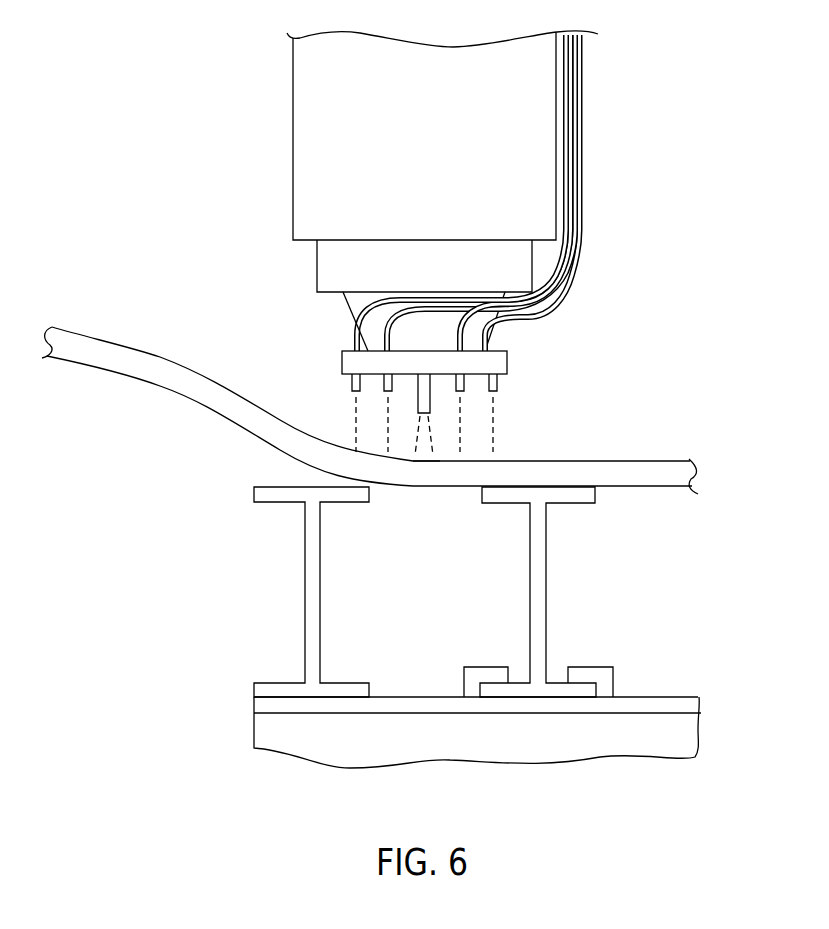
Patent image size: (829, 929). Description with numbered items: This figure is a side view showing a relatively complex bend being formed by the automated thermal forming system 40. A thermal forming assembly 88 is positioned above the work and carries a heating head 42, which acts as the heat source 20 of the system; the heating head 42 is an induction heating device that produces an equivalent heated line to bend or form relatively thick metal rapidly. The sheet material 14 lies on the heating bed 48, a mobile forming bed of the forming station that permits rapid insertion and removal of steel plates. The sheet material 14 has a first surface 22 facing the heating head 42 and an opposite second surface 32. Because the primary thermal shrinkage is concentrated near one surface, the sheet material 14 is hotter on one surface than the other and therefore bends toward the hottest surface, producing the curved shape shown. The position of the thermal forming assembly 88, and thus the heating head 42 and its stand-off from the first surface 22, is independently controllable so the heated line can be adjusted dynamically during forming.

The automated thermal forming system 40 is at (391, 233).
The thermal forming assembly 88 is at (303, 193).
The heating head 42 is at (425, 403).
The sheet material 14 is at (128, 375).
The first surface 22 is at (646, 461).
The second surface 32 is at (650, 487).
The heat source 20 is at (425, 452).
The heating bed 48 is at (643, 608).